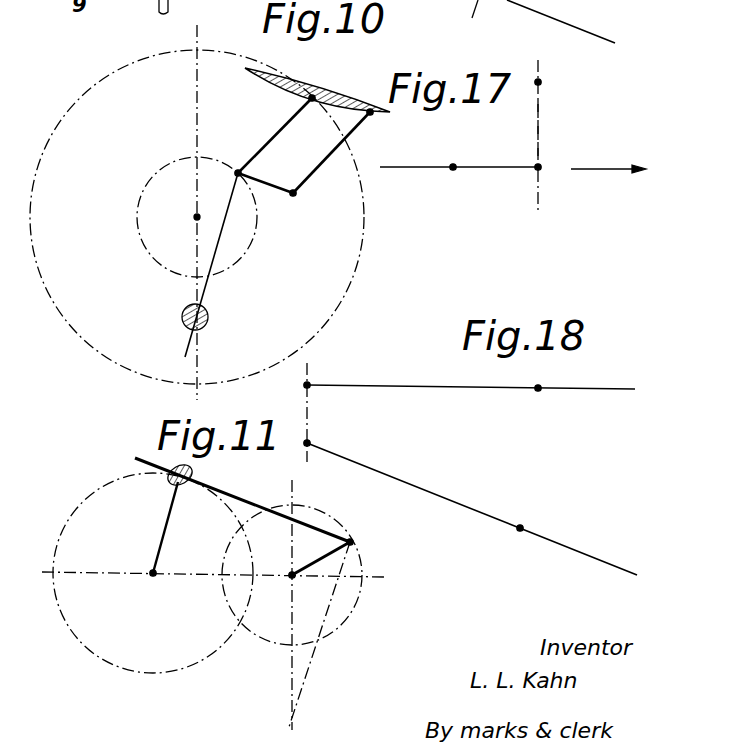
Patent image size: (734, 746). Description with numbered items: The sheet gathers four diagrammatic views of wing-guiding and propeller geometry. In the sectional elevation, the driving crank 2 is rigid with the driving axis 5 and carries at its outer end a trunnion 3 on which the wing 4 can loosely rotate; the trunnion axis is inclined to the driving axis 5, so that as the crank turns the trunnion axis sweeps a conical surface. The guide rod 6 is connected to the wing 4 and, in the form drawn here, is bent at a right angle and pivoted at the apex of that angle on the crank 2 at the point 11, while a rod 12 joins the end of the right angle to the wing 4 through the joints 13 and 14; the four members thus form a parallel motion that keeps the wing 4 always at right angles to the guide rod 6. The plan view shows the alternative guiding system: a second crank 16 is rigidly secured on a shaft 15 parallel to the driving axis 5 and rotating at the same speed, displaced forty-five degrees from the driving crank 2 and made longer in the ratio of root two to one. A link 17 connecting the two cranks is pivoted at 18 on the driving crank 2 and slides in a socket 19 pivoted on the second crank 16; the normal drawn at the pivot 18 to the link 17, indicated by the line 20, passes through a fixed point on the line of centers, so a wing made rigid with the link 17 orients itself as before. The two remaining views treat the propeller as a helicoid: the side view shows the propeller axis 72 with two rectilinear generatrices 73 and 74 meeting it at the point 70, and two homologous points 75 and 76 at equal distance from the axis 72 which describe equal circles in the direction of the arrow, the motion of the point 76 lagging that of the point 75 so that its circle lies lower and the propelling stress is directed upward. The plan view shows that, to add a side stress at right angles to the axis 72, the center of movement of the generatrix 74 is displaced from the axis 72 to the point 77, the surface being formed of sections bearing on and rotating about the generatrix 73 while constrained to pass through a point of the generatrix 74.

In FIG. 10, the crank 2 is at (274, 139).
In FIG. 11, the crank 2 is at (321, 555).
In FIG. 10, the end trunnion 3 is at (310, 99).
In FIG. 10, the wing 4 is at (341, 94).
In FIG. 10, the driving axis 5 is at (195, 217).
In FIG. 11, the driving axis 5 is at (290, 580).
In FIG. 10, the guide rod 6 is at (222, 237).
In FIG. 10, the pivot point 11 is at (240, 168).
In FIG. 10, the rod 12 is at (315, 171).
In FIG. 10, the joint 13 is at (294, 196).
In FIG. 10, the joint 14 is at (372, 116).
In FIG. 11, the shaft 15 is at (151, 578).
In FIG. 11, the second crank 16 is at (165, 534).
In FIG. 11, the link 17 is at (231, 495).
In FIG. 11, the pivot 18 is at (352, 541).
In FIG. 11, the socket 19 is at (172, 483).
In FIG. 11, the path line 20 is at (312, 666).
In FIG. 17, the point 70 is at (470, 157).
In FIG. 17, the axis of the propeller 72 is at (540, 65).
In FIG. 18, the axis of the propeller 72 is at (305, 386).
In FIG. 17, the generatrix 73 is at (539, 83).
In FIG. 18, the generatrix 73 is at (587, 392).
In FIG. 17, the generatrix 74 is at (568, 23).
In FIG. 18, the generatrix 74 is at (577, 552).
In FIG. 18, the point 75 is at (554, 378).
In FIG. 18, the point 76 is at (523, 516).
In FIG. 18, the displaced center 77 is at (305, 443).